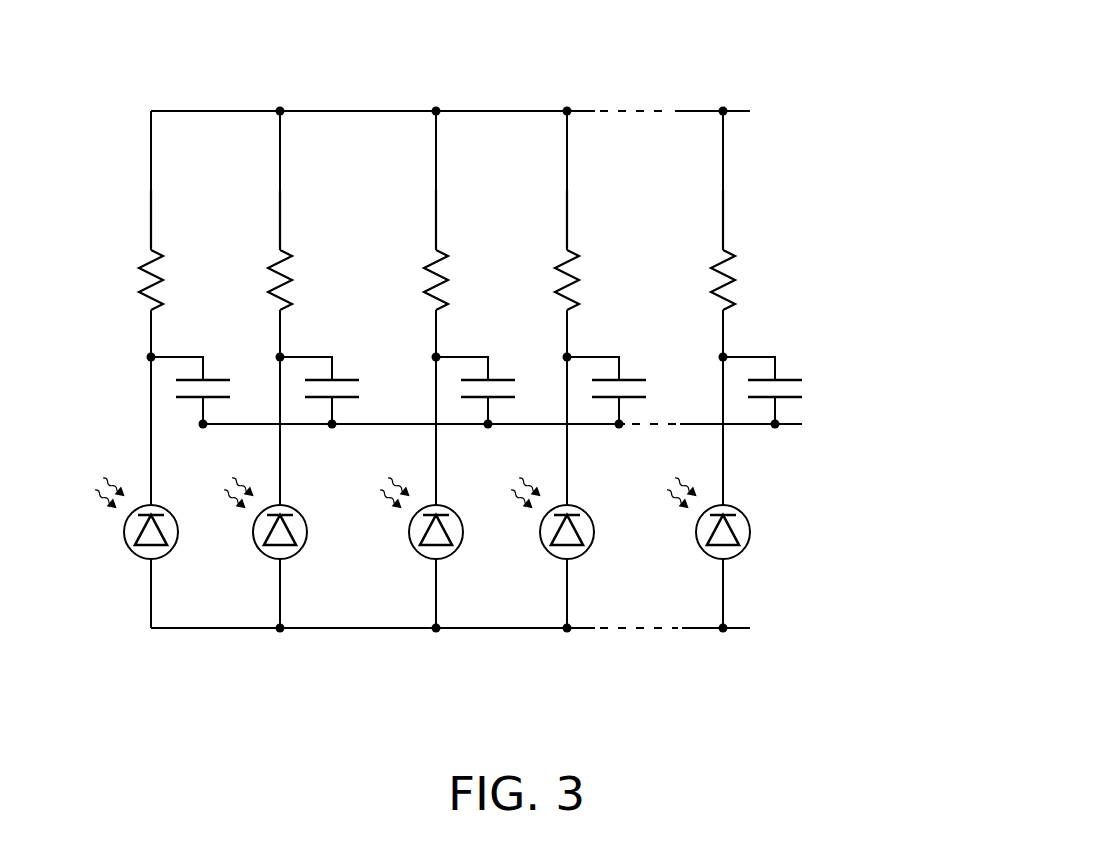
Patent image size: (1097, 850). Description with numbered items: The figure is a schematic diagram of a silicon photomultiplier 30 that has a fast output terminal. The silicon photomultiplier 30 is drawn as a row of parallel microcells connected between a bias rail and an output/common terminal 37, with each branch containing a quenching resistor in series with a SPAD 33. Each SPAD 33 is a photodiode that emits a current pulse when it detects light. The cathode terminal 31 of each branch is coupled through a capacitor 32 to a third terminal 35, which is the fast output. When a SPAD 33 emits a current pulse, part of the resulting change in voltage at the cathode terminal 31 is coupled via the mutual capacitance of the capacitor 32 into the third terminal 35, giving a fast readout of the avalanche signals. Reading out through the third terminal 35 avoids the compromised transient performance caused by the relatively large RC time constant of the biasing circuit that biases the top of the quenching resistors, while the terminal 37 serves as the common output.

The silicon photomultiplier 30 is at (758, 70).
The cathode terminal 31 is at (151, 500).
The capacitor 32 is at (347, 380).
The SPAD 33 is at (450, 540).
The third terminal 35 is at (793, 422).
The terminal 37 is at (742, 630).